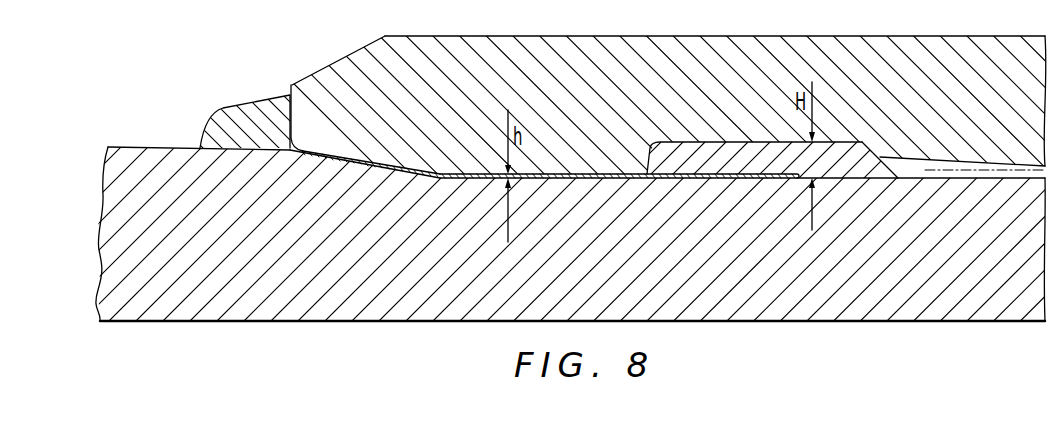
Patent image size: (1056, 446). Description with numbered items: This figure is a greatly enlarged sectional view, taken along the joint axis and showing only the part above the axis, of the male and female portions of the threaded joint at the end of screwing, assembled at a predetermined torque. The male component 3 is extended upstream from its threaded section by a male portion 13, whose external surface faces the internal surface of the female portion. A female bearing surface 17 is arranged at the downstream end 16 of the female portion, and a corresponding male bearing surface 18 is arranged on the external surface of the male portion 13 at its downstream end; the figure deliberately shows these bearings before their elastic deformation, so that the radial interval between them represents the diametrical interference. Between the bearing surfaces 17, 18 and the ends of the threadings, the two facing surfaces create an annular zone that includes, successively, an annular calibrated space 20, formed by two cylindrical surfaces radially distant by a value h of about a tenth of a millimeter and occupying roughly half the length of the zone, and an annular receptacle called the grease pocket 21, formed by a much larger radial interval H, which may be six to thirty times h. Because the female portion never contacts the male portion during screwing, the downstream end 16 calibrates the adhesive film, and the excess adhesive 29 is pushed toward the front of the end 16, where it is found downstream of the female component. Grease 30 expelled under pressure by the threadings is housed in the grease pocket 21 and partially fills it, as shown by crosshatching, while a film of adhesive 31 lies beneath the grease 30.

The male component 3 is at (846, 325).
The male portion 13 is at (400, 295).
The downstream end of the female portion 16 is at (278, 97).
The female bearing surface 17 is at (377, 166).
The male bearing surface 18 is at (350, 167).
The annular calibrated space 20 is at (577, 178).
The annular receptacle (grease pocket) 21 is at (843, 142).
The excess adhesive 29 is at (228, 108).
The grease 30 is at (707, 142).
The film of adhesive 31 is at (735, 178).